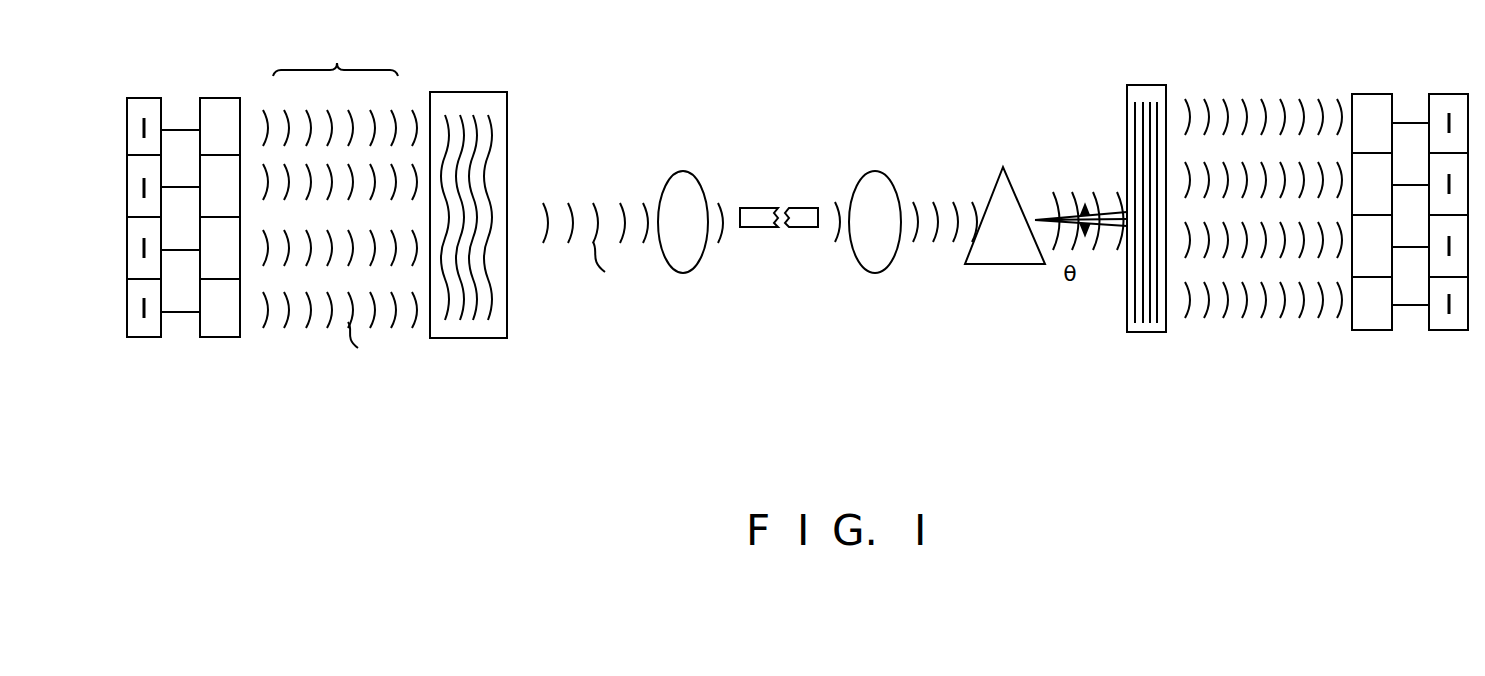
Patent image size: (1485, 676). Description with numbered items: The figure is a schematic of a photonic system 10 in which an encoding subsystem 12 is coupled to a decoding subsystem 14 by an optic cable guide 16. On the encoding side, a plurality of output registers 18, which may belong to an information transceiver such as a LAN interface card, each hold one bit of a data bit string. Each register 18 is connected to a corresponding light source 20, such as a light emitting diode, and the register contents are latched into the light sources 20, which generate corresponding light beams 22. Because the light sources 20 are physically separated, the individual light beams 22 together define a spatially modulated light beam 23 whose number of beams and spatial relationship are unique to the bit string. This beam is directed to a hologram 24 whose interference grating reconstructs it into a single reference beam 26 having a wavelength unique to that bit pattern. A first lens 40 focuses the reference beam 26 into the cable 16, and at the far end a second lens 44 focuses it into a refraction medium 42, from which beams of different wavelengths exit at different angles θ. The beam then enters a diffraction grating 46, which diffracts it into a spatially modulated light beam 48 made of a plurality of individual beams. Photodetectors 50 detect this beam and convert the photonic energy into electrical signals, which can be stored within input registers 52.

The photonic system 10 is at (843, 458).
The encoding subsystem 12 is at (372, 400).
The decoding subsystem 14 is at (1187, 380).
The optic cable guide 16 is at (755, 216).
The output registers 18 is at (148, 338).
The light sources 20 is at (222, 338).
The light beams 22 is at (288, 322).
The spatially modulated light beam 23 is at (335, 55).
The hologram 24 is at (457, 332).
The reference beam 26 is at (540, 242).
The first lens 40 is at (690, 270).
The refraction medium 42 is at (980, 256).
The second lens 44 is at (872, 263).
The diffraction grating 46 is at (1143, 332).
The spatially modulated light beam 48 is at (1187, 312).
The photodetectors 50 is at (1362, 331).
The input registers 52 is at (1440, 331).